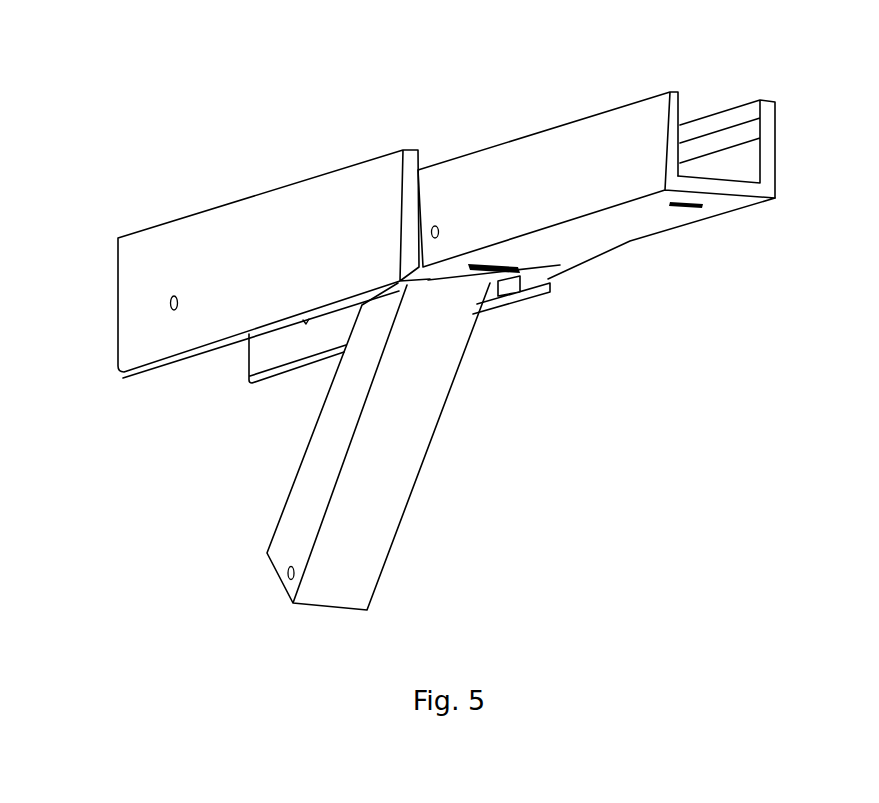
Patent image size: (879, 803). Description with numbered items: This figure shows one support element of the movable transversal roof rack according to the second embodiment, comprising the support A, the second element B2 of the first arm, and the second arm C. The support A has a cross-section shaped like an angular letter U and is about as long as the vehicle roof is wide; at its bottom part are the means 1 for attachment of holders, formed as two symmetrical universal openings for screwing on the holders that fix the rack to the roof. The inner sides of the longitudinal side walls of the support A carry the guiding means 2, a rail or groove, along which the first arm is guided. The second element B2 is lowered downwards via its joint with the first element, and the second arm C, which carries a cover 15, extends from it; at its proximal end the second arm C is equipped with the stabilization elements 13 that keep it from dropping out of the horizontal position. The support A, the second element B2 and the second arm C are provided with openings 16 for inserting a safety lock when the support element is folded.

The means for attachment of holders 1 is at (515, 271).
The guiding means of the support 2 is at (752, 130).
The stabilization element 13 is at (417, 287).
The cover of the second arm 15 is at (190, 268).
The opening for insertion of the safeguard 16 is at (170, 305).
The support A is at (529, 121).
The second element of the first arm B2 is at (421, 513).
The second arm C is at (246, 244).